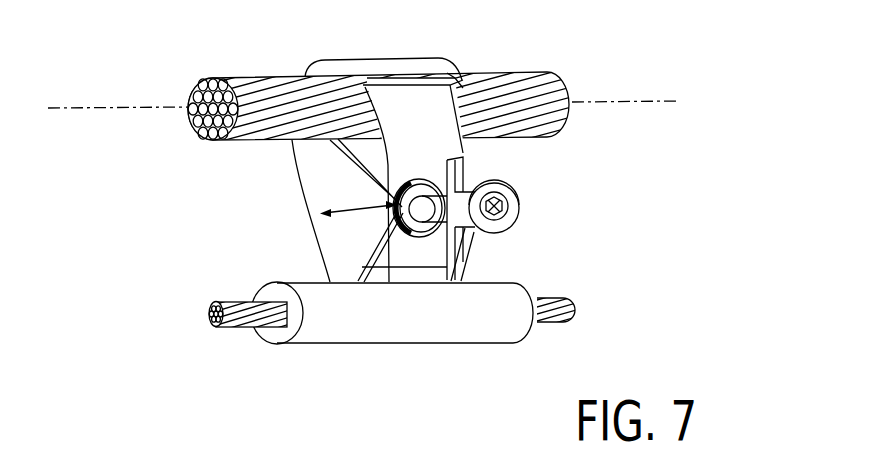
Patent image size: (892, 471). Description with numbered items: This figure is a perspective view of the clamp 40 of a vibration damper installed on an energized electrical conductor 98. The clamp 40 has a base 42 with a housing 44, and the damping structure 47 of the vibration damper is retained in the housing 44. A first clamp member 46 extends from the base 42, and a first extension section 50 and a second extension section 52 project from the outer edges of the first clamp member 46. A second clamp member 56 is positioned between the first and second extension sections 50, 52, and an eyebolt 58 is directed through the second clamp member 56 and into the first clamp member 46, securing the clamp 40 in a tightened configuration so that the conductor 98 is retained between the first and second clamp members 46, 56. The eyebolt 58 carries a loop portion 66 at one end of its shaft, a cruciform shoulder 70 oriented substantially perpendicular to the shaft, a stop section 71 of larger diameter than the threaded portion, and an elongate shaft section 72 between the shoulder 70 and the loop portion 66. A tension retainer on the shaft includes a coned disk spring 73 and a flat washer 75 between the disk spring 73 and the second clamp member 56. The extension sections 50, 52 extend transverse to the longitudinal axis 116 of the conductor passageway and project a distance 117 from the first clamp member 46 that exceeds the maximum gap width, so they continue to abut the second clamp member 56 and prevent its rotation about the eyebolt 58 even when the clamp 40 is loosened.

The clamp 40 is at (705, 319).
The base 42 is at (328, 267).
The housing 44 is at (293, 345).
The first clamp member 46 is at (352, 60).
The damping structure 47 is at (235, 330).
The first extension section 50 is at (347, 163).
The second extension section 52 is at (447, 222).
The second clamp member 56 is at (432, 92).
The eyebolt 58 is at (512, 185).
The loop portion 66 is at (520, 218).
The cruciform shoulder 70 is at (462, 245).
The stop section 71 is at (426, 222).
The elongate shaft section 72 is at (468, 185).
The coned disk spring 73 is at (415, 223).
The flat washer 75 is at (402, 233).
The energized electrical conductor 98 is at (513, 72).
The longitudinal axis 116 is at (143, 107).
The distance 117 is at (340, 214).